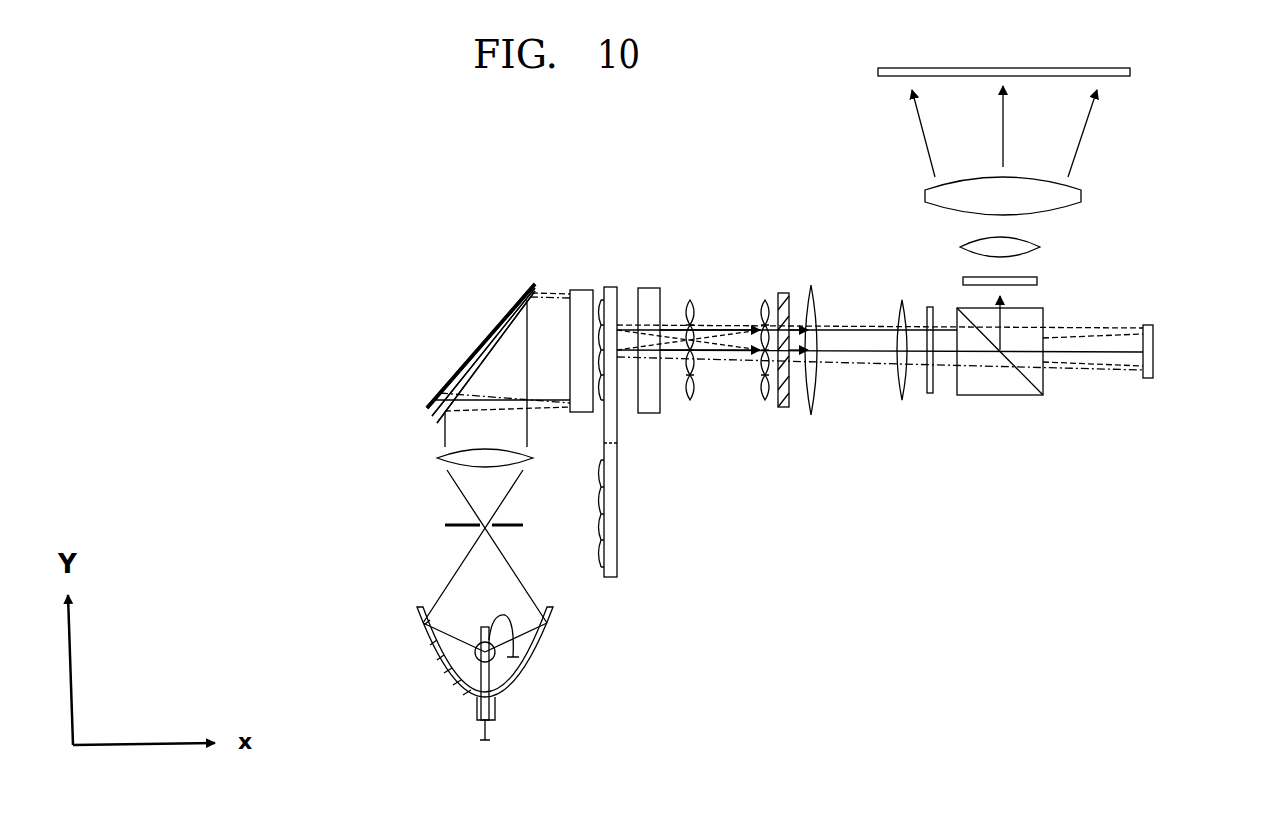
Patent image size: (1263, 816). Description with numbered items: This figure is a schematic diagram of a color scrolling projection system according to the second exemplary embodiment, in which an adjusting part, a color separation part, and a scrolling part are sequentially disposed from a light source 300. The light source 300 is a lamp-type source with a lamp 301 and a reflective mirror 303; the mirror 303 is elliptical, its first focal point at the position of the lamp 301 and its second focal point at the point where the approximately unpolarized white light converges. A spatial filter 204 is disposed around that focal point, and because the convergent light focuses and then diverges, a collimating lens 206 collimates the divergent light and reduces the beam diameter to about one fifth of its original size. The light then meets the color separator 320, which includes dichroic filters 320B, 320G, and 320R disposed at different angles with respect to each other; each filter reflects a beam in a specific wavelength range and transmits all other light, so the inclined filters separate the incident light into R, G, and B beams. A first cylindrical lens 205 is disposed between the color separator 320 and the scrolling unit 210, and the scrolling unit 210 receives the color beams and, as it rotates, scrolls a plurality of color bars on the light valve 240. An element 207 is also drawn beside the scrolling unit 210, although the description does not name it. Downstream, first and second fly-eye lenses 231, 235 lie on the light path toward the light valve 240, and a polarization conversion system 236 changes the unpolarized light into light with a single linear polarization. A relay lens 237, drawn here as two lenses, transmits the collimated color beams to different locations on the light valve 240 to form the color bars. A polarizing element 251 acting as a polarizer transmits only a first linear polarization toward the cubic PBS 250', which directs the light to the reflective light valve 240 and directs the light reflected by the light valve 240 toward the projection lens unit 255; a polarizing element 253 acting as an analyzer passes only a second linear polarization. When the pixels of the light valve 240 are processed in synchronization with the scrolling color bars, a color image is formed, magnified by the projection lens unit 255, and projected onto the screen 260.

The spatial filter 204 is at (445, 525).
The first cylindrical lens 205 is at (583, 290).
The collimating lens 206 is at (437, 458).
The polarization converter 207 is at (650, 288).
The scrolling unit 210 is at (610, 287).
The first fly-eye lens 231 is at (690, 400).
The second fly-eye lens 235 is at (763, 400).
The polarization conversion system 236 is at (783, 407).
The relay lens 237 is at (900, 400).
The light valve 240 is at (1148, 325).
The cubic PBS 250' is at (1013, 387).
The polarizing element 251 is at (932, 393).
The polarizing element 253 is at (1037, 281).
The projection lens unit 255 is at (915, 182).
The screen 260 is at (1130, 72).
The light source 300 is at (474, 673).
The lamp 301 is at (468, 662).
The reflective mirror 303 is at (540, 672).
The color separator 320 is at (460, 275).
The dichroic filter 320B is at (502, 323).
The dichroic filter 320G is at (482, 348).
The dichroic filter 320R is at (455, 377).